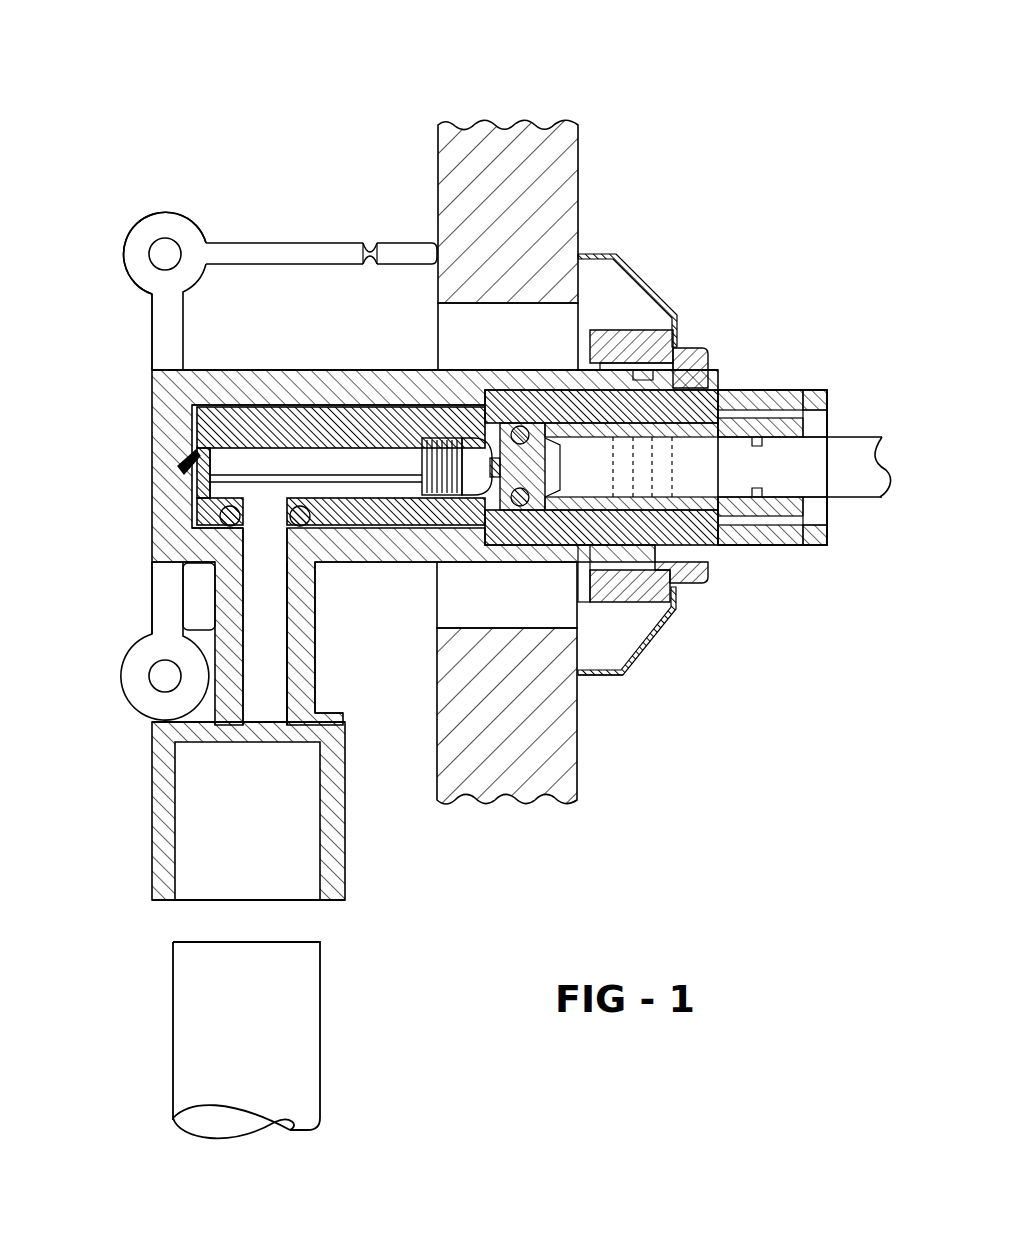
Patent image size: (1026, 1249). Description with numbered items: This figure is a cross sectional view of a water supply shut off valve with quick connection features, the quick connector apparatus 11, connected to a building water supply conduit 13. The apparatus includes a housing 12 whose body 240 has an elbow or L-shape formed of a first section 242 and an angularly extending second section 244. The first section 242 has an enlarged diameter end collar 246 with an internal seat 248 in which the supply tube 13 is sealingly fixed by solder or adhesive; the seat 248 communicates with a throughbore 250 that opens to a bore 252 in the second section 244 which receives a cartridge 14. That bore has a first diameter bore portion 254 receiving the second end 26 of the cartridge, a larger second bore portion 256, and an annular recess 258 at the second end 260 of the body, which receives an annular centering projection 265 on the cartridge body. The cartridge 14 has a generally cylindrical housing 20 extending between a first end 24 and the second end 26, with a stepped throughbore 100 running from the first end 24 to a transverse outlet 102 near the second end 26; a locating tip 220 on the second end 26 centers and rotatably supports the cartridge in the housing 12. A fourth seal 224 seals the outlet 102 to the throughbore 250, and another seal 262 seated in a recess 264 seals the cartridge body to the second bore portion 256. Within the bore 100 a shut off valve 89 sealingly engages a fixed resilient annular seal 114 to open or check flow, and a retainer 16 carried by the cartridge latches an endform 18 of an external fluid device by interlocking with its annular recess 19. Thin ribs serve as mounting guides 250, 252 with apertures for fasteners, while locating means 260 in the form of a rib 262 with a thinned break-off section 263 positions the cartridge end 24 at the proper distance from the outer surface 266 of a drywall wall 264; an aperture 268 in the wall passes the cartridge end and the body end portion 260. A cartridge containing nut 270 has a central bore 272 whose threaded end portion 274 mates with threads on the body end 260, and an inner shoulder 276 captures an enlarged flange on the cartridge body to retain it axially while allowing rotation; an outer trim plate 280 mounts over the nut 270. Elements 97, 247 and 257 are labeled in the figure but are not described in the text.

The quick connector apparatus 11 is at (265, 108).
The housing 12 is at (150, 495).
The water supply conduit 13 is at (180, 1048).
The cartridge 14 is at (233, 397).
The retainer 16 is at (800, 345).
The endform 18 is at (850, 480).
The annular recess 19 is at (783, 545).
The cartridge housing 20 is at (323, 417).
The first end 24 is at (828, 392).
The second end 26 is at (152, 398).
The shut off valve 89 is at (490, 425).
The spring 97 is at (412, 445).
The throughbore 100 is at (380, 545).
The outlet 102 is at (220, 545).
The annular seal 114 is at (540, 405).
The locating tip 220 is at (182, 462).
The fourth seal 224 is at (200, 522).
The body portion 240 is at (180, 540).
The first section 242 is at (160, 600).
The second section 244 is at (372, 598).
The end collar 246 is at (160, 810).
The block bottom 247 is at (172, 898).
The seat 248 is at (170, 858).
The throughbore 250 is at (168, 202).
The bore 252 is at (268, 508).
The first diameter bore portion 254 is at (378, 460).
The second bore portion 256 is at (195, 575).
The mounting hole 257 is at (158, 250).
The annular recess 258 is at (680, 608).
The second end 260 is at (333, 236).
The seal 262 is at (272, 240).
The thinned down section 263 is at (380, 250).
The wall 264 is at (500, 130).
The annular centering projection 265 is at (615, 380).
The outer surface 266 is at (578, 152).
The aperture 268 is at (548, 296).
The cartridge containing nut 270 is at (783, 382).
The central bore 272 is at (712, 350).
The threaded end portion 274 is at (640, 655).
The inner shoulder 276 is at (690, 590).
The trim plate 280 is at (625, 700).